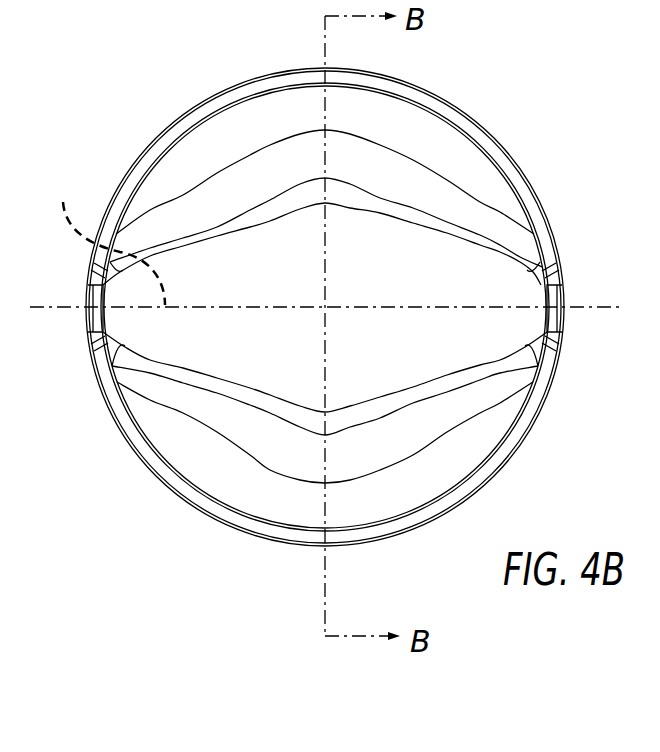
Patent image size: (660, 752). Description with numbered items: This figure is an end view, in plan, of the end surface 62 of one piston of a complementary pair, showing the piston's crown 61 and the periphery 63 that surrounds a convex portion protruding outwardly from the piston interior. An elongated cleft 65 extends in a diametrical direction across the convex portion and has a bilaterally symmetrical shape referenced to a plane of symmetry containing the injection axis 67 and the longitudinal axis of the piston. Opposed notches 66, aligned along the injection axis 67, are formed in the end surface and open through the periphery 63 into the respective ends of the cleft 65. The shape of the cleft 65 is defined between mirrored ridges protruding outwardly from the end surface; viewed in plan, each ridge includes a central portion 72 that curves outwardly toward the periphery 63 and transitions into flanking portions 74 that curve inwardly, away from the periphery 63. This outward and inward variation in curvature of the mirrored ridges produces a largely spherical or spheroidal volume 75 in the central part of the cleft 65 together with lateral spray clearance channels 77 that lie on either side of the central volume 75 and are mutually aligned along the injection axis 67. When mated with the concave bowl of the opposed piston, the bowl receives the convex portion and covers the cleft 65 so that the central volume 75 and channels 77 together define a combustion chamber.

The crown 61 is at (553, 187).
The end surface 62 is at (227, 140).
The periphery 63 is at (503, 467).
The elongated cleft 65 is at (465, 333).
The opposed notches 66 is at (563, 302).
The injection axis 67 is at (111, 240).
The central portion 72 is at (292, 137).
The flanking portions 74 is at (178, 195).
The spherical volume 75 is at (362, 245).
The lateral spray clearance channels 77 is at (472, 280).